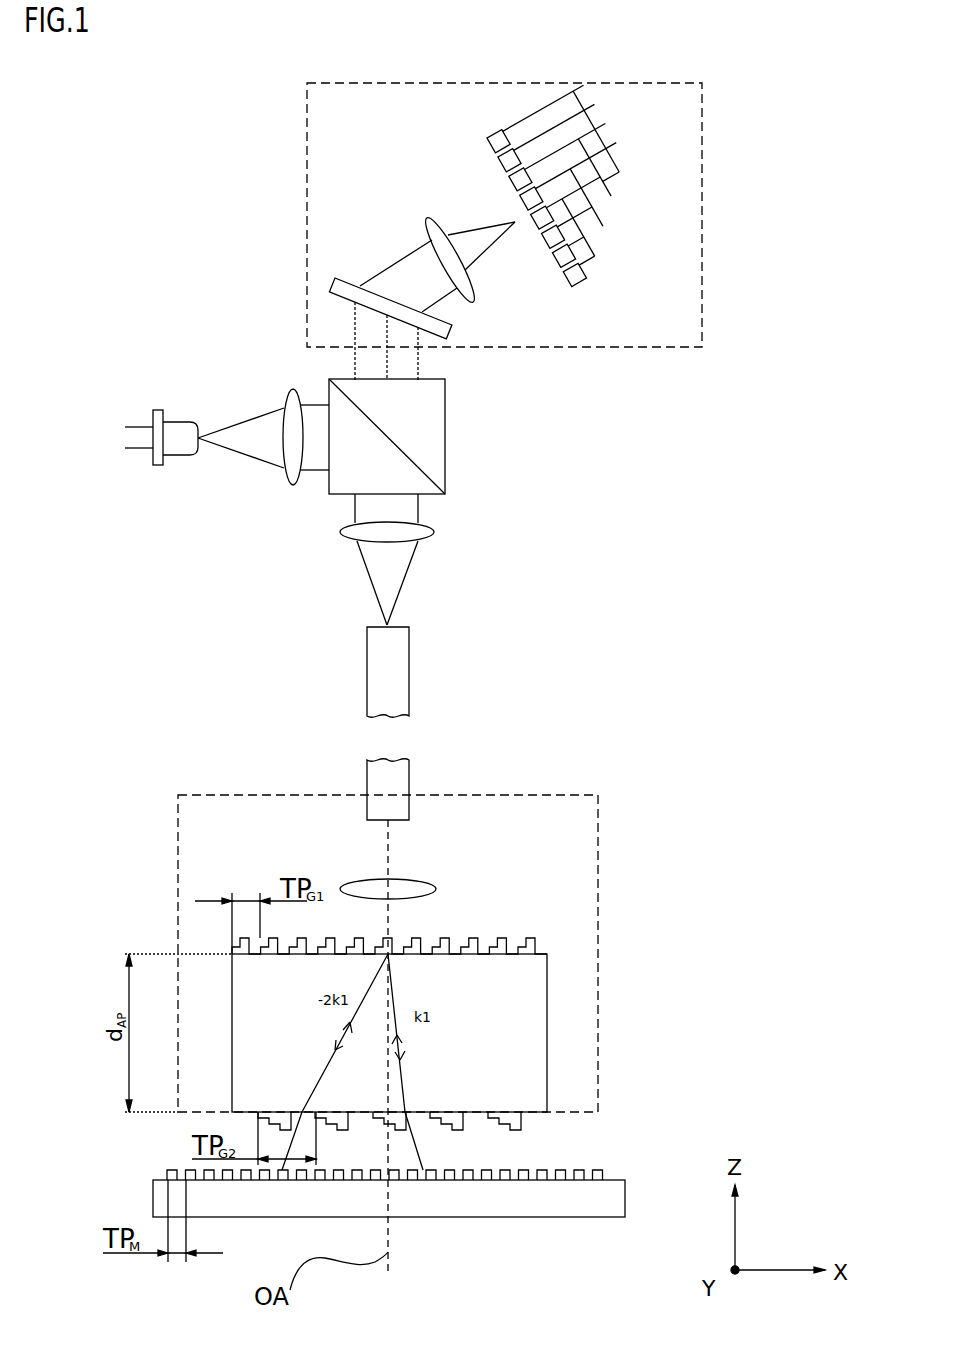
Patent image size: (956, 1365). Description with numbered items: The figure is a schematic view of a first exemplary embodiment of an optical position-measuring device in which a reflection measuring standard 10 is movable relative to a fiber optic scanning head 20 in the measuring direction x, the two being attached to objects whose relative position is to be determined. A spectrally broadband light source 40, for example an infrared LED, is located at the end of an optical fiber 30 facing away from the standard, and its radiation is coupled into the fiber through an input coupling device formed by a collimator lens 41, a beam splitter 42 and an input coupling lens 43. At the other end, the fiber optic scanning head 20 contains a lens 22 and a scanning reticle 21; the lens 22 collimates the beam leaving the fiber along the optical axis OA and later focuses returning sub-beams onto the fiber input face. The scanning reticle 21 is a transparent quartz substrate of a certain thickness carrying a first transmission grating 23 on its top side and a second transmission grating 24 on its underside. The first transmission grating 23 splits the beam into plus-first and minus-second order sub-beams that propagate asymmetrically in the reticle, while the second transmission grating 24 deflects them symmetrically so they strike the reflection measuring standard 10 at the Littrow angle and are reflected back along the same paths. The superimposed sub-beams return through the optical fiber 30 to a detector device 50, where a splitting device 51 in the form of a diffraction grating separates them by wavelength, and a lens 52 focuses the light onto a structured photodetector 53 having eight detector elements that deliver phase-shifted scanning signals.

The reflection measuring standard 10 is at (583, 1172).
The fiber optic scanning head 20 is at (598, 815).
The scanning reticle 21 is at (525, 1005).
The lens 22 is at (405, 890).
The first transmission grating 23 is at (555, 938).
The second transmission grating 24 is at (515, 1122).
The optical fiber 30 is at (395, 703).
The light source 40 is at (180, 433).
The collimator lens 41 is at (292, 422).
The beam splitter 42 is at (355, 480).
The input coupling lens 43 is at (405, 532).
The detector device 50 is at (702, 198).
The splitting device 51 is at (337, 281).
The lens 52 is at (446, 250).
The structured photodetector 53 is at (492, 127).